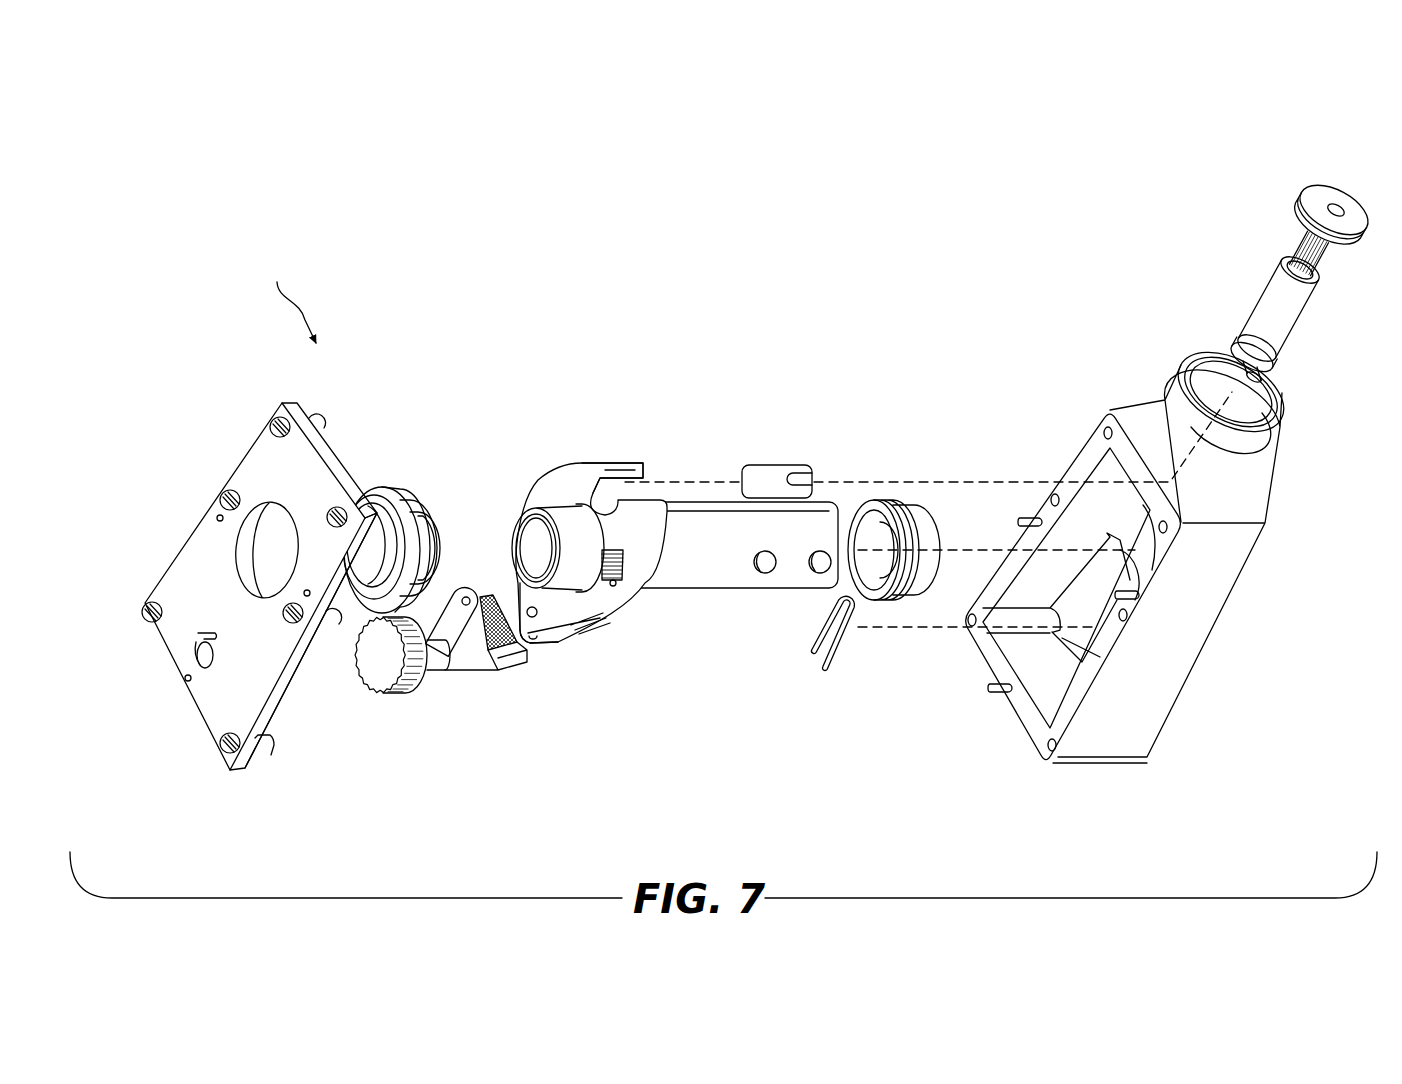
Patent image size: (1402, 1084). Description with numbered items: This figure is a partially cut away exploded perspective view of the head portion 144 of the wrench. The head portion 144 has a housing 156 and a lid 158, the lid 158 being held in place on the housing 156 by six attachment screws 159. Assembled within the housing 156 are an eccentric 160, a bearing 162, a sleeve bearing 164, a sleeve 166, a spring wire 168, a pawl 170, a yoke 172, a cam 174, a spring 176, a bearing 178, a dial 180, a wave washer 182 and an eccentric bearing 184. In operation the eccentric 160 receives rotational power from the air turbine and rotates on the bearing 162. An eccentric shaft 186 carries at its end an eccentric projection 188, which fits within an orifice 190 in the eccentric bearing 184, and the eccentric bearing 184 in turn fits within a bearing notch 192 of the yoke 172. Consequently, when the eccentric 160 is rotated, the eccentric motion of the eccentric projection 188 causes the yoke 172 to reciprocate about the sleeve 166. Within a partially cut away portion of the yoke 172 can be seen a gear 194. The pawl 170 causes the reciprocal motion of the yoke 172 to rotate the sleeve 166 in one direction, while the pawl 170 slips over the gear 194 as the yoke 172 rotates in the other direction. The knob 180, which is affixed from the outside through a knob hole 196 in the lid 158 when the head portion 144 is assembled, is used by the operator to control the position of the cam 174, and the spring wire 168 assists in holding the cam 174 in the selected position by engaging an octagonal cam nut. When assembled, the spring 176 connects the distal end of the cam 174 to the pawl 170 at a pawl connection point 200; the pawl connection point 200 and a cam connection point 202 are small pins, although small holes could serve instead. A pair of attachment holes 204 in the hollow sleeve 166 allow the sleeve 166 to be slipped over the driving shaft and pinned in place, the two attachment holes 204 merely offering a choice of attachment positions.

The head portion 144 is at (285, 294).
The housing 156 is at (1195, 617).
The lid 158 is at (193, 570).
The attachment screws 159 is at (300, 623).
The eccentric 160 is at (1290, 327).
The bearing 162 is at (1317, 192).
The sleeve bearing 164 is at (918, 592).
The sleeve 166 is at (707, 563).
The spring wire 168 is at (845, 665).
The pawl 170 is at (570, 638).
The yoke 172 is at (578, 477).
The cam 174 is at (452, 643).
The spring 176 is at (483, 592).
The bearing 178 is at (377, 490).
The dial 180 is at (395, 672).
The wave washer 182 is at (407, 500).
The eccentric bearing 184 is at (773, 462).
The eccentric shaft 186 is at (1267, 312).
The eccentric projection 188 is at (1280, 383).
The orifice 190 is at (805, 478).
The bearing notch 192 is at (605, 483).
The gear 194 is at (617, 585).
The knob hole 196 is at (188, 680).
The pawl connection point 200 is at (540, 641).
The cam connection point 202 is at (448, 585).
The attachment holes 204 is at (815, 580).